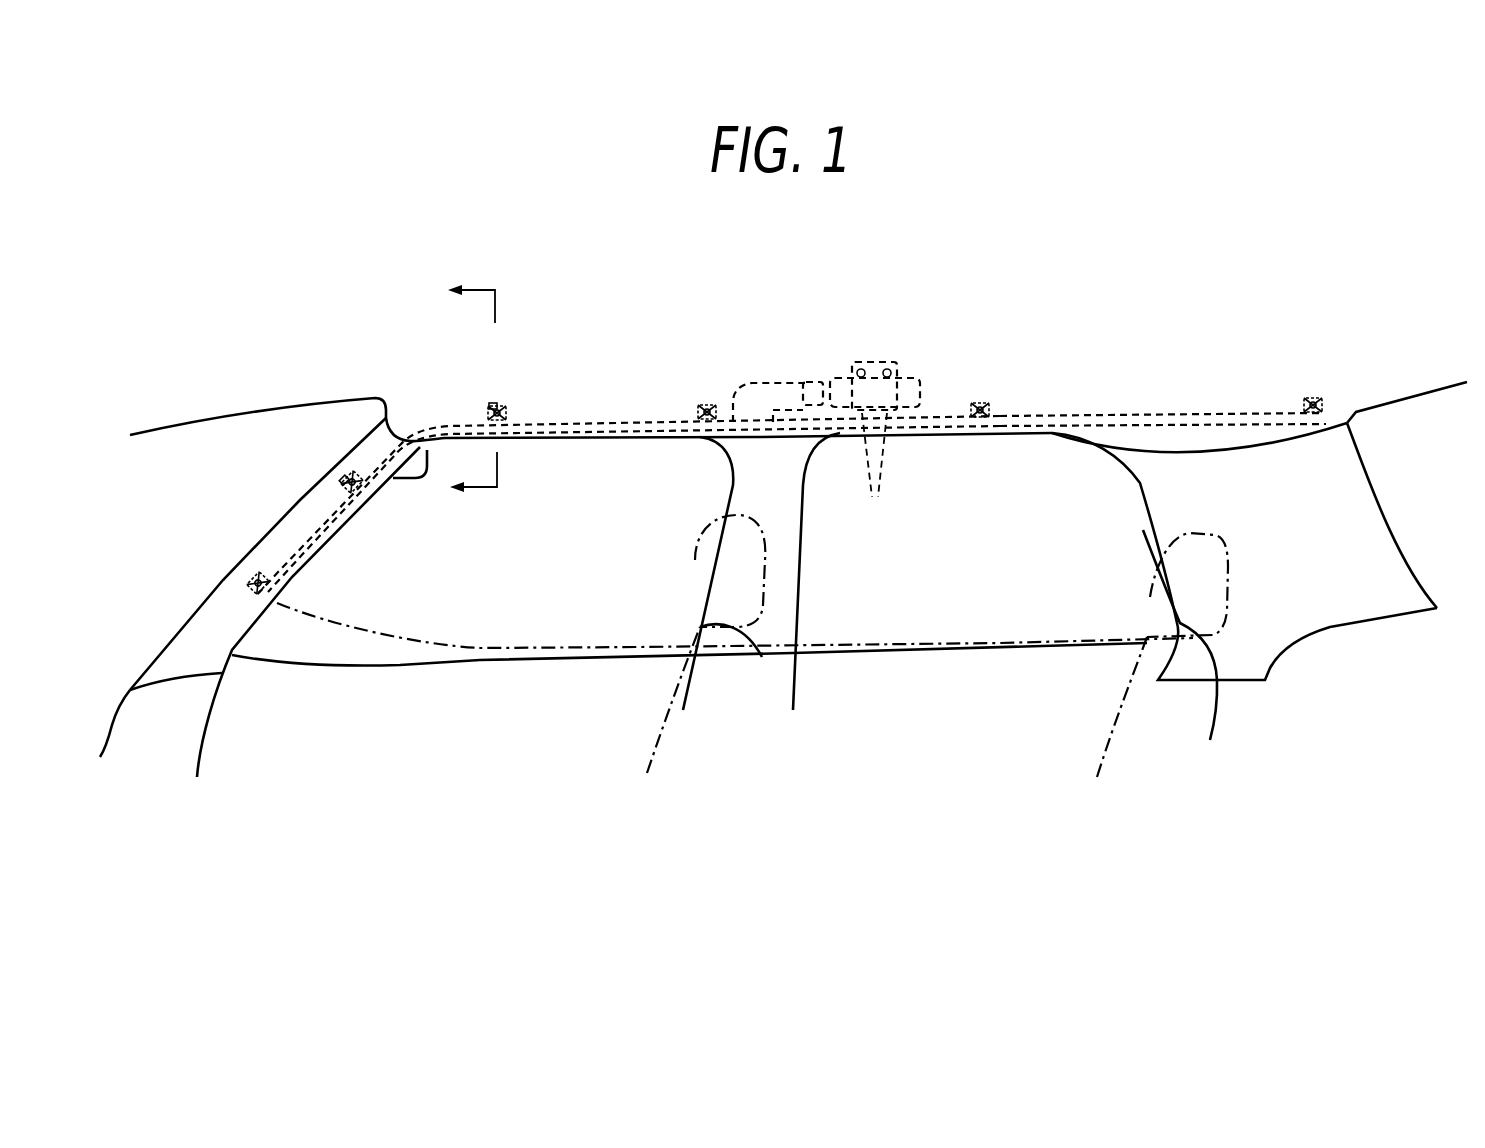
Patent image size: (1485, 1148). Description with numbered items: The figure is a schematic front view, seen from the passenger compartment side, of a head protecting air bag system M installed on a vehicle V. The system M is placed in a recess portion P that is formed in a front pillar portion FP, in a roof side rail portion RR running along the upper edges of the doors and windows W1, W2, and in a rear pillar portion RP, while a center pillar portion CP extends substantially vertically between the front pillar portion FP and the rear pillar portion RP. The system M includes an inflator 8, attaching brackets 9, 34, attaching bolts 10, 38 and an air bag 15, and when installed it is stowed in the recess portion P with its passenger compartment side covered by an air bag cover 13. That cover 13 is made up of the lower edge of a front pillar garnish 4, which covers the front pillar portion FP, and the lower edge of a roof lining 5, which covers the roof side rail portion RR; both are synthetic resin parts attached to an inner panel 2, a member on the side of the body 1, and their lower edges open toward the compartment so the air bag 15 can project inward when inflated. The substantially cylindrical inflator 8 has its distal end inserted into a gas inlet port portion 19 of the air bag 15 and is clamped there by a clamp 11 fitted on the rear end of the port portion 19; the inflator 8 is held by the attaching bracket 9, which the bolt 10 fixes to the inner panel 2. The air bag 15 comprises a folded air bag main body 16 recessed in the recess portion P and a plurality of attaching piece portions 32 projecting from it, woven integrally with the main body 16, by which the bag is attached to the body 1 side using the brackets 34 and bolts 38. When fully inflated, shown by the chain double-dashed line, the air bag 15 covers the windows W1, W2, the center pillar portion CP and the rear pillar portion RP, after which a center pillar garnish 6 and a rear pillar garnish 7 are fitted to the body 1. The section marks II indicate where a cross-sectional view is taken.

The body 1 is at (603, 434).
The inner panel 2 is at (697, 305).
The front pillar garnish 4 is at (250, 573).
The roof lining 5 is at (1228, 407).
The center pillar garnish 6 is at (730, 580).
The rear pillar garnish 7 is at (1377, 553).
The inflator 8 is at (908, 377).
The attaching bracket 9 is at (876, 360).
The attaching bolt 10 is at (876, 479).
The clamp 11 is at (810, 378).
The air bag cover 13 is at (285, 600).
The air bag 15 is at (1163, 333).
The air bag main body 16 is at (1057, 410).
The gas inlet port portion 19 is at (764, 383).
The attaching piece portions 32 is at (356, 470).
The attaching bracket 34 is at (654, 417).
The attaching bolt 38 is at (488, 403).
The front pillar portion FP is at (176, 631).
The center pillar portion CP is at (812, 622).
The rear pillar portion RP is at (1376, 632).
The roof side rail portion RR is at (1150, 410).
The head protecting air bag system M is at (1408, 340).
The recess portion P is at (1020, 410).
The vehicle V is at (241, 774).
The window W1 is at (387, 647).
The window W2 is at (977, 625).
The section line II is at (485, 392).